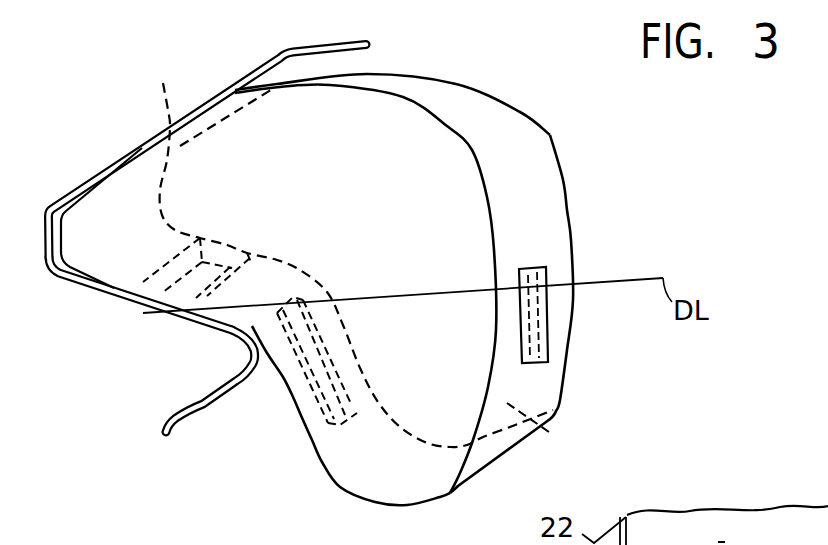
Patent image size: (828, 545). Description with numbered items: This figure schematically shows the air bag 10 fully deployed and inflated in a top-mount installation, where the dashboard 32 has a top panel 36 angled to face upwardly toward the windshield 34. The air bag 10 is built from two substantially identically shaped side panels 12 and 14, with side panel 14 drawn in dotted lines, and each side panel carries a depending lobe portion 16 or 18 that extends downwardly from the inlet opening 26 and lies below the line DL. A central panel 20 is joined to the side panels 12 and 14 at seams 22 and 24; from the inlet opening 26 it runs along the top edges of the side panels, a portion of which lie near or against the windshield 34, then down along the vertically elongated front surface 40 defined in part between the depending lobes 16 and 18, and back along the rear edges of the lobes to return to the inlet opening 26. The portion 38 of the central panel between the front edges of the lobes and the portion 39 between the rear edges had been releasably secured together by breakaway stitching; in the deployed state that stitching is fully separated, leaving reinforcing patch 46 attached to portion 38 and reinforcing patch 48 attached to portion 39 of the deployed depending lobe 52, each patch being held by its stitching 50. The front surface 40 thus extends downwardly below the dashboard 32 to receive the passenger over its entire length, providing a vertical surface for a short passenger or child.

The air bag 10 is at (422, 272).
The side panel 12 is at (340, 457).
The side panel 14 is at (344, 249).
The depending lobe portion 16 is at (357, 463).
The depending lobe portion 18 is at (557, 431).
The central panel 20 is at (475, 110).
The seam 22 is at (400, 97).
The seam 24 is at (572, 212).
The inlet opening 26 is at (103, 295).
The dashboard 32 is at (240, 351).
The windshield 34 is at (136, 156).
The top panel 36 is at (204, 319).
The portion of the central panel 38 is at (537, 361).
The portion of the central panel 39 is at (307, 427).
The vertically elongated front surface 40 is at (533, 195).
The reinforcing patch 46 is at (550, 270).
The reinforcing patch 48 is at (295, 355).
The stitching 50 is at (545, 352).
The deployed depending lobe 52 is at (373, 470).